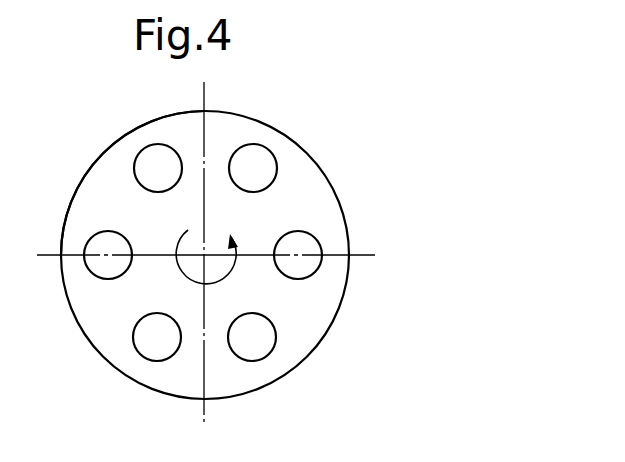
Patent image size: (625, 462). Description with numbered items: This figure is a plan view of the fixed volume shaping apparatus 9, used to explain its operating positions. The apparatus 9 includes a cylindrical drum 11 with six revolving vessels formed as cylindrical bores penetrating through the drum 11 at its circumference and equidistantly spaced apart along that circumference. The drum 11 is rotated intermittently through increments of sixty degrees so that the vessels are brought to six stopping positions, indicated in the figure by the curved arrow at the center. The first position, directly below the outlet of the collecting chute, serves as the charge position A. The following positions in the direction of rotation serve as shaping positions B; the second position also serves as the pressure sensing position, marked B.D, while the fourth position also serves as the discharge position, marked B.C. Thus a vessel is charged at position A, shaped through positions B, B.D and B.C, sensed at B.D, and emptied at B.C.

The fixed volume shaping apparatus 9 is at (368, 156).
The cylindrical drum 11 is at (72, 200).
The charge position A is at (88, 241).
The shaping position B is at (270, 362).
The shaping and discharge position B.C is at (318, 274).
The shaping and pressure sensing position B.D is at (150, 362).